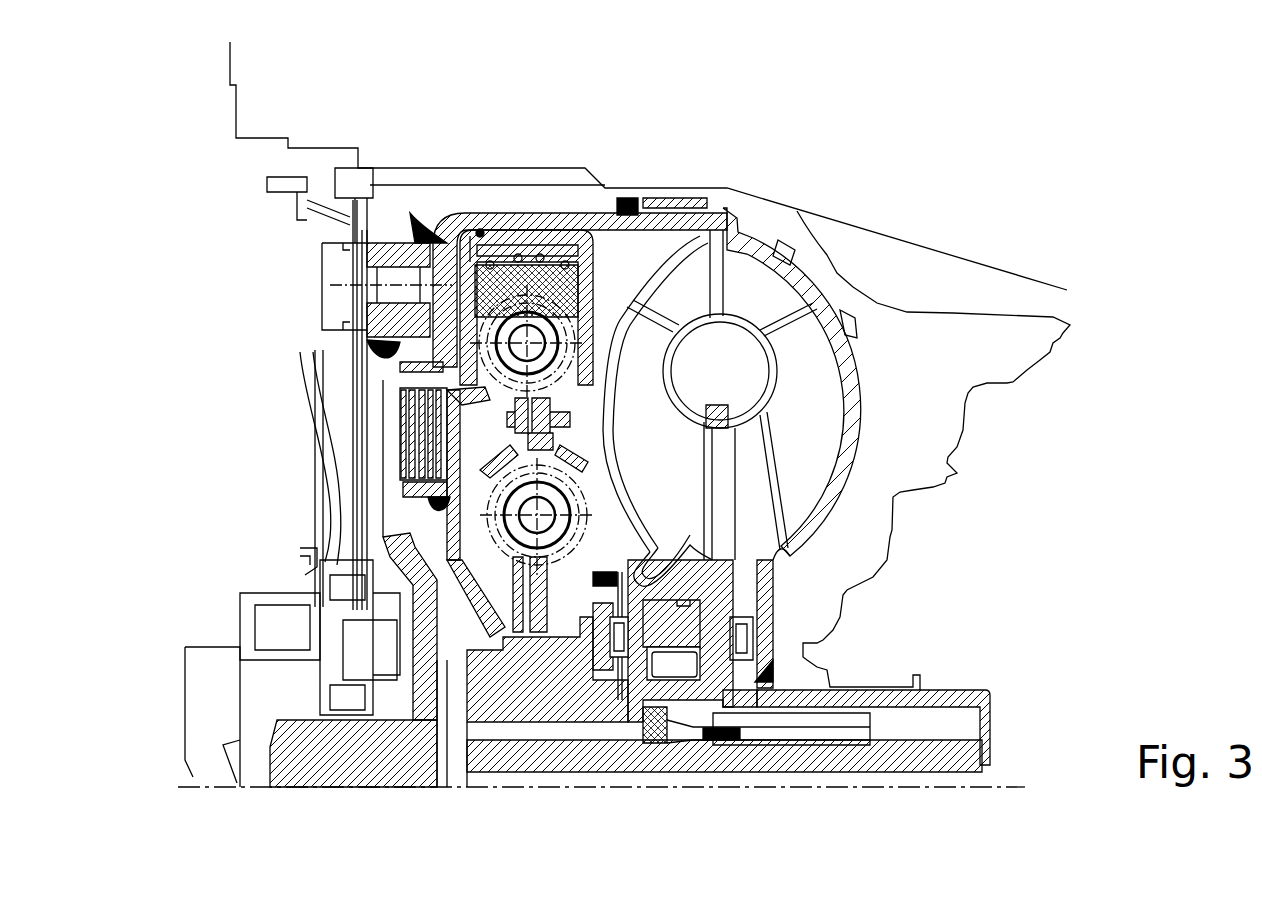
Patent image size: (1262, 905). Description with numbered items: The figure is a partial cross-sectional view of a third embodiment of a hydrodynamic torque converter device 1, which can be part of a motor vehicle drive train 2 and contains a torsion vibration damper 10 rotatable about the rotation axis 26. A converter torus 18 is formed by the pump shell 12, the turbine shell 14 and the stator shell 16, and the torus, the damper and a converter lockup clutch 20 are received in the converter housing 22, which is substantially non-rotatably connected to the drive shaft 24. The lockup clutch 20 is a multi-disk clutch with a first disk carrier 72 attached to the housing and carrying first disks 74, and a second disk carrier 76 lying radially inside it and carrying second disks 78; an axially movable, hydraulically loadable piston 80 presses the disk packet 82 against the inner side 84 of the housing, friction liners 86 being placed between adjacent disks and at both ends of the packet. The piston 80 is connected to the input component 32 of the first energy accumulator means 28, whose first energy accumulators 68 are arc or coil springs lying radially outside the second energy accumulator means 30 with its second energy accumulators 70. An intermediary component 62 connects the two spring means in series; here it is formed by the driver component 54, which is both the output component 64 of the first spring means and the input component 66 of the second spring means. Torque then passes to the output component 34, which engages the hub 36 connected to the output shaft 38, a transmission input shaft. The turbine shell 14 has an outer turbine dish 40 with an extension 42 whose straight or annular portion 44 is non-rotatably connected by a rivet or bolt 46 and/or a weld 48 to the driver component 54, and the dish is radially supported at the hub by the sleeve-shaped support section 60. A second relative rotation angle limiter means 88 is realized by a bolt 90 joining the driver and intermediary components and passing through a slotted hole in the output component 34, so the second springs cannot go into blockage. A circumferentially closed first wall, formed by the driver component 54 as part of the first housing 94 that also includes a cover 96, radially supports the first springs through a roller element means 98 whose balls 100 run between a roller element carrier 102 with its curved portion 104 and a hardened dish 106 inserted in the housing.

The hydrodynamic torque converter device 1 is at (935, 200).
The motor vehicle drive train 2 is at (1010, 705).
The torsion vibration damper 10 is at (610, 240).
The pump shell 12 is at (770, 375).
The turbine shell 14 is at (695, 372).
The stator shell 16 is at (718, 402).
The converter torus 18 is at (820, 525).
The converter lockup clutch 20 is at (410, 510).
The converter housing 22 is at (585, 205).
The drive shaft 24 is at (215, 652).
The rotation axis 26 is at (1025, 787).
The first energy accumulator means 28 is at (510, 405).
The second energy accumulator means 30 is at (600, 485).
The input component 32 is at (455, 338).
The output component 34 is at (540, 690).
The hub 36 is at (560, 720).
The output shaft 38 is at (930, 755).
The outer turbine dish 40 is at (580, 400).
The extension 42 is at (645, 555).
The straight or annular portion 44 is at (610, 700).
The rivet or bolt 46 is at (605, 595).
The weld 48 is at (712, 560).
The driver component 54 is at (652, 545).
The support section 60 is at (625, 720).
The intermediary component 62 is at (490, 515).
The output component of first energy accumulator means 64 is at (628, 204).
The input component of second energy accumulator means 66 is at (580, 458).
The first energy accumulators 68 is at (570, 335).
The second energy accumulators 70 is at (600, 582).
The first disk carrier 72 is at (385, 338).
The first disks 74 is at (380, 372).
The second disk carrier 76 is at (405, 487).
The second disks 78 is at (405, 472).
The piston 80 is at (505, 575).
The disk packet 82 is at (398, 403).
The inner side of converter housing 84 is at (370, 540).
The friction liners 86 is at (405, 440).
The second relative rotation angle limiter means 88 is at (585, 400).
The bolt 90 is at (560, 415).
The first housing 94 is at (590, 268).
The cover 96 is at (527, 257).
The roller element means 98 is at (560, 272).
The roller elements 100 is at (524, 248).
The roller element carrier 102 is at (415, 235).
The portion 104 is at (440, 310).
The dish 106 is at (545, 250).